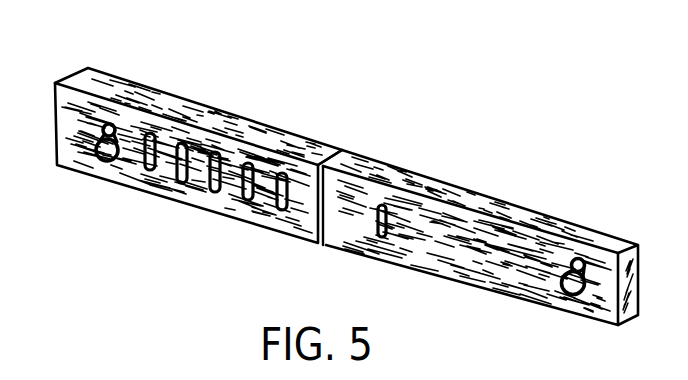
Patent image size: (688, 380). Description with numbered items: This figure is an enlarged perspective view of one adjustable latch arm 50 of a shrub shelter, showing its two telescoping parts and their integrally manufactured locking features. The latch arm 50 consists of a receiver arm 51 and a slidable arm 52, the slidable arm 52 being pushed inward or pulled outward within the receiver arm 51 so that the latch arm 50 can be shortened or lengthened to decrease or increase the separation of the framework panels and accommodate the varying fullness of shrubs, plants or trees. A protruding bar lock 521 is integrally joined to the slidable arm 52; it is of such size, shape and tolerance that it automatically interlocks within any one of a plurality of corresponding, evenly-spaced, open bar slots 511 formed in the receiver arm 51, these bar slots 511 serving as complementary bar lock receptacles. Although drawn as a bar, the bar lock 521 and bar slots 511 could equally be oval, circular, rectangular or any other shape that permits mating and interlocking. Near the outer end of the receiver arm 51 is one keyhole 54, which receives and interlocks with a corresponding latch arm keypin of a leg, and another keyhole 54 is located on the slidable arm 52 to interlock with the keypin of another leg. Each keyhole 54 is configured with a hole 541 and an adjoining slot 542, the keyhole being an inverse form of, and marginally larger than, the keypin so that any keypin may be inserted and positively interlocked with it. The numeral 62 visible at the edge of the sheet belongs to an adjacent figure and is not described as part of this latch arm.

The adjustable latch arm 50 is at (333, 124).
The receiver arm 51 is at (183, 102).
The bar slots 511 is at (278, 213).
The slidable arm 52 is at (522, 208).
The bar lock 521 is at (378, 228).
The keyhole 54 is at (90, 168).
The hole 541 is at (112, 165).
The slot 542 is at (117, 143).
The numeral from adjacent figure (partial) 62 is at (676, 72).